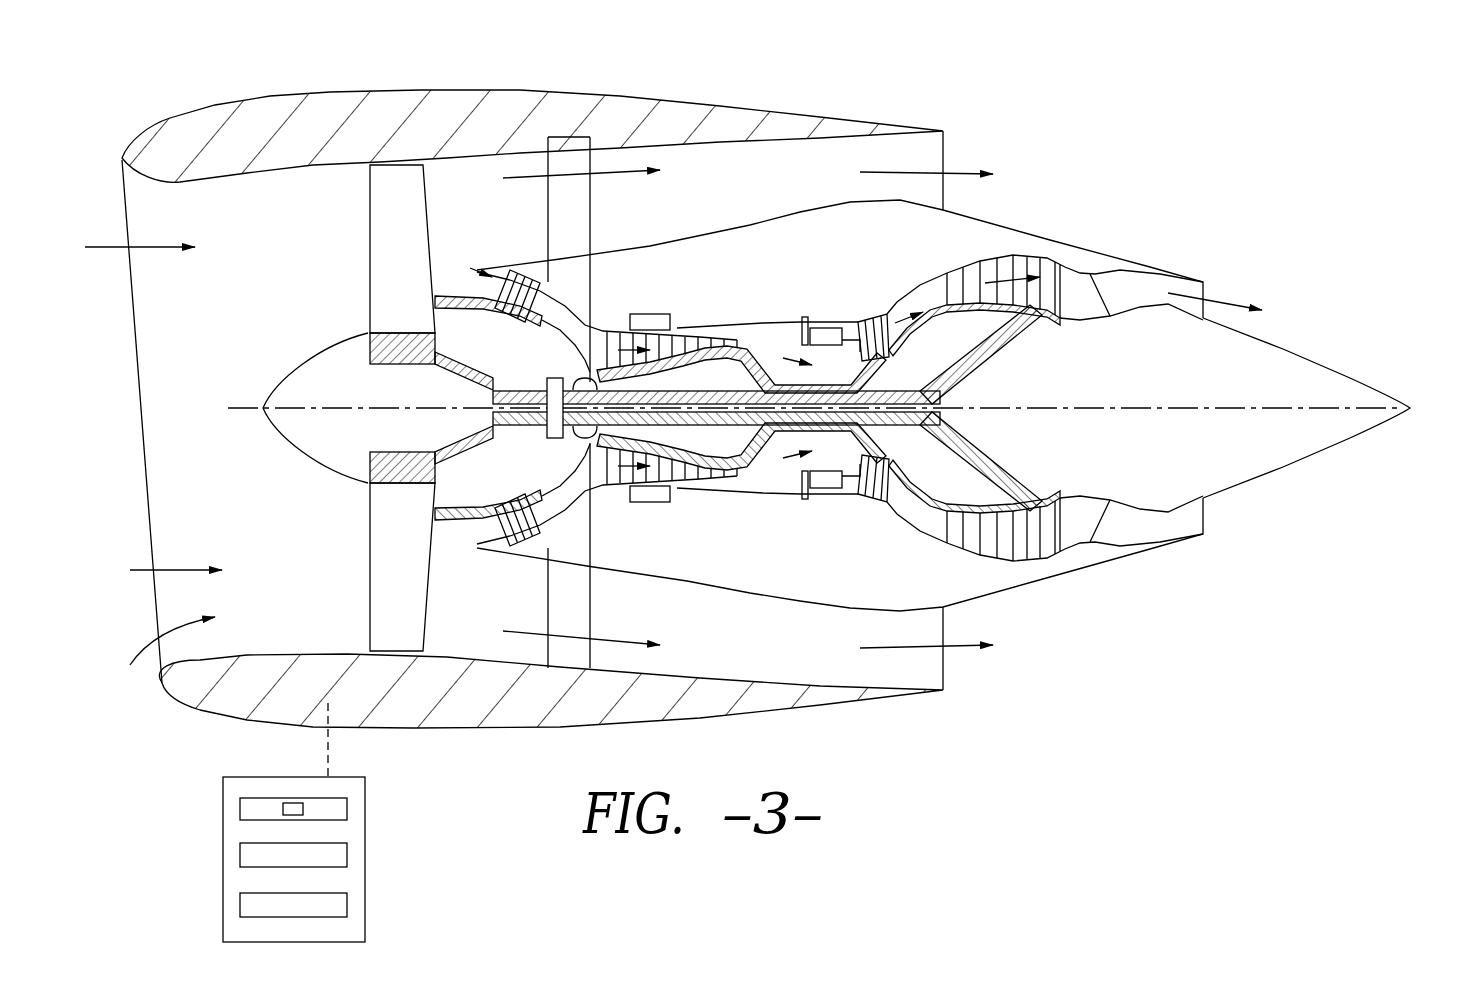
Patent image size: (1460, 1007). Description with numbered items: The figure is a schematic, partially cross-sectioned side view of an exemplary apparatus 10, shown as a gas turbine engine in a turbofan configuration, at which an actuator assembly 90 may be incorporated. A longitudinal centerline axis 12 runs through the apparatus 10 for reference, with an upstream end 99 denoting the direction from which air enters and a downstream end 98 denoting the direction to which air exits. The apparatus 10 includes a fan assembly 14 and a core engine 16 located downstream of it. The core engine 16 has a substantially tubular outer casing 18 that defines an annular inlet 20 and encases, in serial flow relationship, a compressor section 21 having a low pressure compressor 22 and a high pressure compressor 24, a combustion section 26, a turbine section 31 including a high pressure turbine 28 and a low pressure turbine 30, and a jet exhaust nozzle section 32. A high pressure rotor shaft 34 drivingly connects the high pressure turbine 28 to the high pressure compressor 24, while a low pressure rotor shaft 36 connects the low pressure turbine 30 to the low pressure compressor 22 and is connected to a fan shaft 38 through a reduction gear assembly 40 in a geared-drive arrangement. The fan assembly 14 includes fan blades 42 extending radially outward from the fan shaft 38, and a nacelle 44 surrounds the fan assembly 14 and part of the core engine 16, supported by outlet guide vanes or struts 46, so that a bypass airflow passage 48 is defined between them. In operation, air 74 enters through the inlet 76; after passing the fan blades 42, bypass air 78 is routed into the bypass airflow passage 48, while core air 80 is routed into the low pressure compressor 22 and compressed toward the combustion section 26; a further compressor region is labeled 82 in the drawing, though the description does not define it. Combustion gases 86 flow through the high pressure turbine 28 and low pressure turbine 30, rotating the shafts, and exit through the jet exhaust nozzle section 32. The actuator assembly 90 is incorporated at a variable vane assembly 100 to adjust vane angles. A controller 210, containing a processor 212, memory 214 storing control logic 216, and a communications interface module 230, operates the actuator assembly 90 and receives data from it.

The apparatus 10 is at (1188, 162).
The longitudinal centerline axis 12 is at (1115, 408).
The fan assembly 14 is at (458, 182).
The core engine 16 is at (807, 210).
The outer casing 18 is at (783, 602).
The annular inlet 20 is at (482, 533).
The compressor section 21 is at (600, 508).
The low pressure compressor 22 is at (558, 490).
The high pressure compressor 24 is at (623, 482).
The combustion section 26 is at (820, 495).
The high pressure turbine 28 is at (885, 482).
The low pressure turbine 30 is at (1030, 570).
The turbine section 31 is at (900, 530).
The jet exhaust nozzle section 32 is at (1122, 540).
The high pressure rotor shaft 34 is at (873, 357).
The low pressure rotor shaft 36 is at (980, 362).
The fan shaft 38 is at (438, 373).
The reduction gear assembly 40 is at (548, 372).
The fan blades 42 is at (385, 242).
The nacelle 44 is at (392, 92).
The outlet guide vanes or struts 46 is at (577, 163).
The bypass airflow passage 48 is at (708, 196).
The air 74 is at (157, 250).
The inlet 76 is at (158, 658).
The bypass air 78 is at (606, 180).
The core air 80 is at (470, 273).
The compressor 82 is at (613, 335).
The combustion gases 86 is at (877, 323).
The actuator assembly 90 is at (567, 137).
The downstream end 98 is at (1420, 419).
The upstream end 99 is at (82, 419).
The variable vane assembly 100 is at (473, 270).
The controller 210 is at (265, 783).
The processor 212 is at (323, 850).
The memory 214 is at (323, 803).
The control logic 216 is at (243, 805).
The communications interface module 230 is at (323, 897).